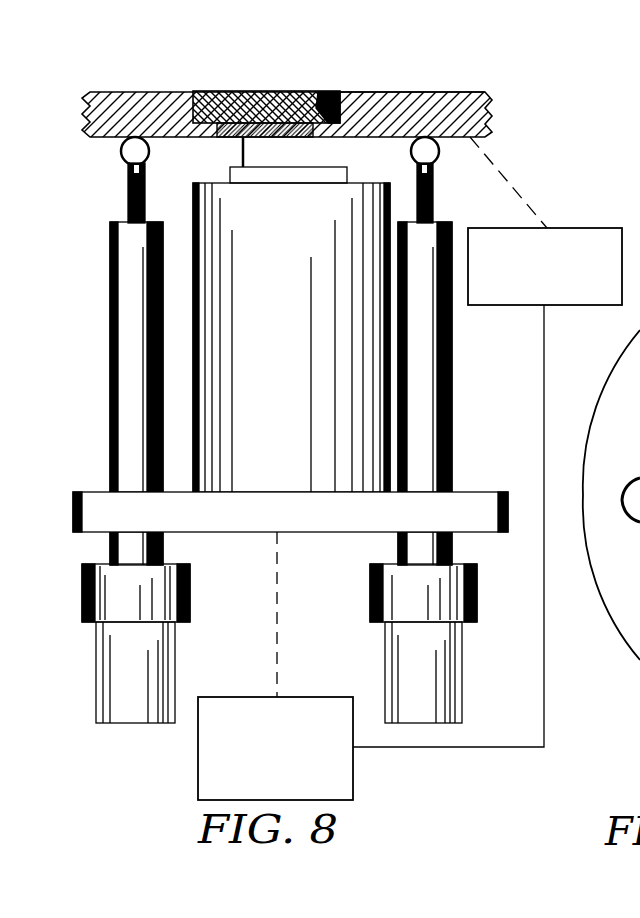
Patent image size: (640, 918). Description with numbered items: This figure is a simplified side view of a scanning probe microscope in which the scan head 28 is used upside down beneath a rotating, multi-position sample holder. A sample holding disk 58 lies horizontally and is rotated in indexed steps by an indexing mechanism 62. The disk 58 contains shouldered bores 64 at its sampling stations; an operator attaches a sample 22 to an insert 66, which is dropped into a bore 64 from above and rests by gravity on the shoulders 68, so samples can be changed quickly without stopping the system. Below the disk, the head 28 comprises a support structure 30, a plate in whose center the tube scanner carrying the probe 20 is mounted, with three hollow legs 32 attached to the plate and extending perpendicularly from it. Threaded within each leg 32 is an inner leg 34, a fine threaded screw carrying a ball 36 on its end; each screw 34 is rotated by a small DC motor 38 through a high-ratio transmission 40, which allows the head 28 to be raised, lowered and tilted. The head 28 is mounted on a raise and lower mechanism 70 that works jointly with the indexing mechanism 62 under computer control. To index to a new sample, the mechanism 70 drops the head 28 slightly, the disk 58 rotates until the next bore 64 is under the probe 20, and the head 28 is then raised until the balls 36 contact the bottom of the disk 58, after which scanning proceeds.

The probe 20 is at (245, 152).
The sample 22 is at (302, 140).
The scan head 28 is at (153, 760).
The support structure 30 is at (281, 533).
The hollow legs 32 is at (130, 325).
The inner legs 34 is at (128, 200).
The balls 36 is at (124, 160).
The DC motors 38 is at (142, 683).
The transmissions 40 is at (190, 583).
The sample holding disk 58 is at (463, 93).
The indexing mechanism 62 is at (565, 228).
The shouldered bores 64 is at (388, 93).
The inserts 66 is at (223, 92).
The shoulders 68 is at (318, 110).
The raise and lower mechanism 70 is at (355, 773).